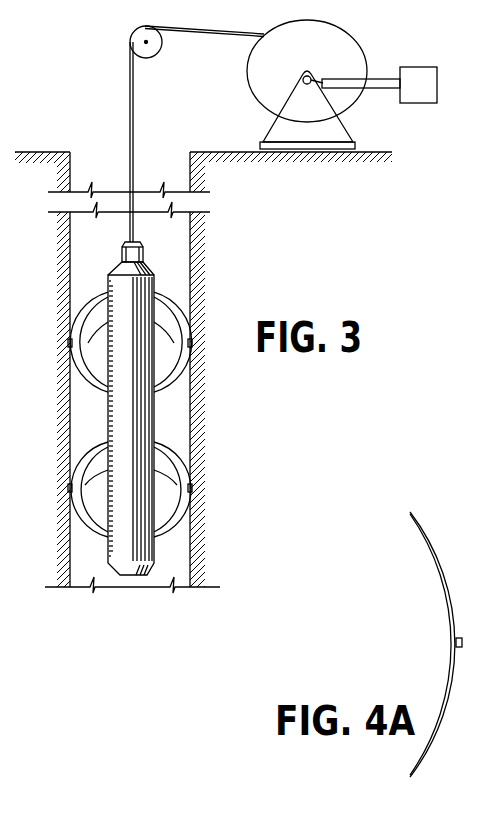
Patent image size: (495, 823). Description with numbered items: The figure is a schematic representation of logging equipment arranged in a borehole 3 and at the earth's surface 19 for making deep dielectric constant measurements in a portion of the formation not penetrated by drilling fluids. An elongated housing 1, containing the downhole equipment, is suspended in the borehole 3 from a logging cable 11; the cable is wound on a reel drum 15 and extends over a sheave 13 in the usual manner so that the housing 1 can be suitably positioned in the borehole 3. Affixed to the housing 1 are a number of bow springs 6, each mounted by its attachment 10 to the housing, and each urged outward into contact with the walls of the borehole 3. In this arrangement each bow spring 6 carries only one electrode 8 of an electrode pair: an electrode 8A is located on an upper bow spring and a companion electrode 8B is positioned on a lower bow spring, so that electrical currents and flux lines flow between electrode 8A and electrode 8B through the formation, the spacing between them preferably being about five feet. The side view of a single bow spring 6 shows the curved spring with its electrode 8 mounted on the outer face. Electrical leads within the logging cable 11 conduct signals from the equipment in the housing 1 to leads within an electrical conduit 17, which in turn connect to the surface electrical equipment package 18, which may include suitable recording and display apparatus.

In FIG. 3, the elongated housing 1 is at (102, 283).
In FIG. 3, the borehole 3 is at (192, 246).
In FIG. 3, the bow spring 6 is at (80, 378).
In FIG. 4A, the bow spring 6 is at (437, 572).
In FIG. 4A, the electrode 8 is at (462, 643).
In FIG. 3, the electrode on upper bow spring 8A is at (68, 343).
In FIG. 3, the electrode on lower bow spring 8B is at (68, 488).
In FIG. 3, the spring mounting arm 10 is at (88, 343).
In FIG. 3, the logging cable 11 is at (128, 103).
In FIG. 3, the sheave 13 is at (160, 47).
In FIG. 3, the reel drum 15 is at (251, 92).
In FIG. 3, the electrical conduit 17 is at (378, 79).
In FIG. 3, the surface electrical equipment package 18 is at (437, 80).
In FIG. 3, the earth surface 19 is at (380, 152).